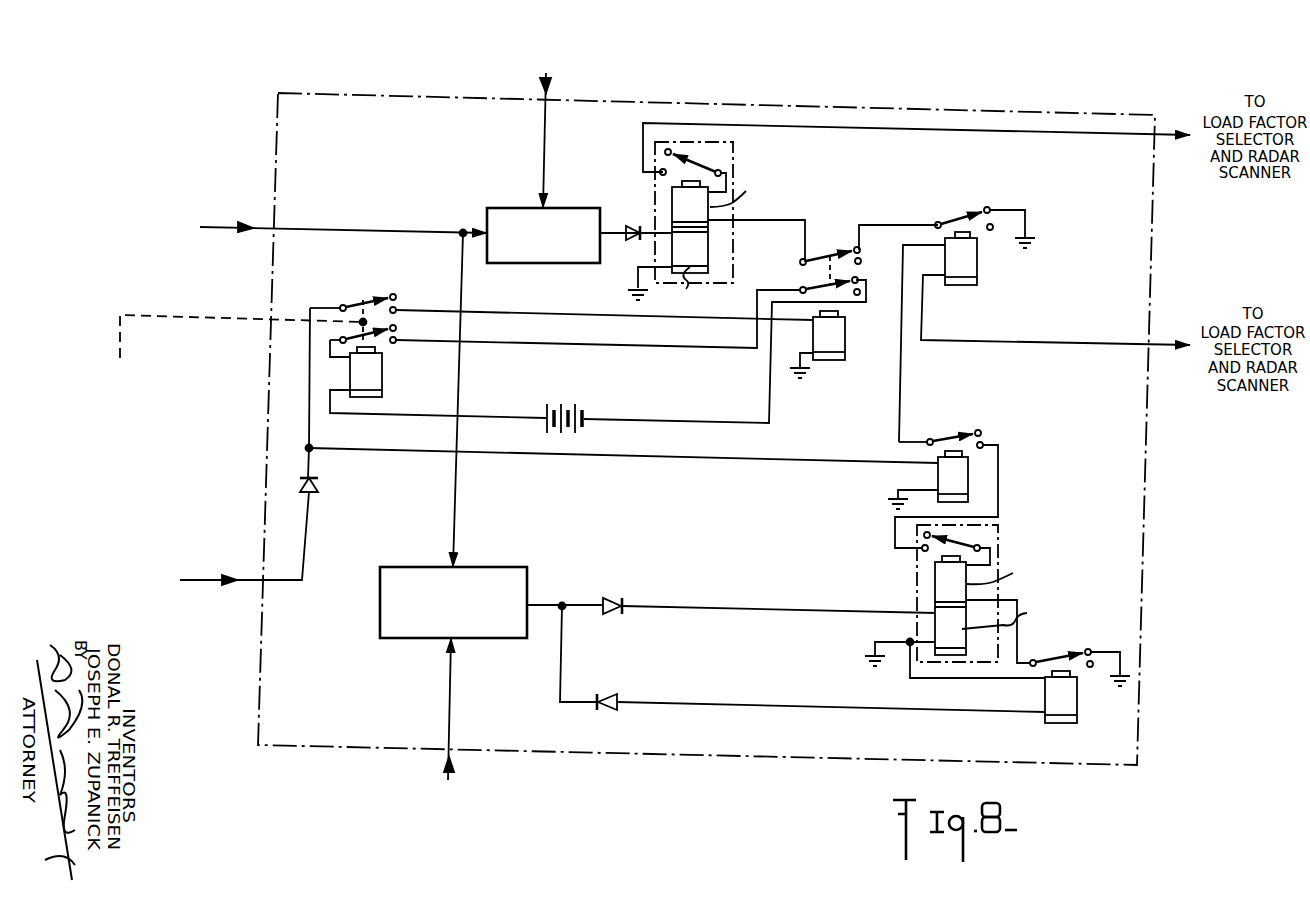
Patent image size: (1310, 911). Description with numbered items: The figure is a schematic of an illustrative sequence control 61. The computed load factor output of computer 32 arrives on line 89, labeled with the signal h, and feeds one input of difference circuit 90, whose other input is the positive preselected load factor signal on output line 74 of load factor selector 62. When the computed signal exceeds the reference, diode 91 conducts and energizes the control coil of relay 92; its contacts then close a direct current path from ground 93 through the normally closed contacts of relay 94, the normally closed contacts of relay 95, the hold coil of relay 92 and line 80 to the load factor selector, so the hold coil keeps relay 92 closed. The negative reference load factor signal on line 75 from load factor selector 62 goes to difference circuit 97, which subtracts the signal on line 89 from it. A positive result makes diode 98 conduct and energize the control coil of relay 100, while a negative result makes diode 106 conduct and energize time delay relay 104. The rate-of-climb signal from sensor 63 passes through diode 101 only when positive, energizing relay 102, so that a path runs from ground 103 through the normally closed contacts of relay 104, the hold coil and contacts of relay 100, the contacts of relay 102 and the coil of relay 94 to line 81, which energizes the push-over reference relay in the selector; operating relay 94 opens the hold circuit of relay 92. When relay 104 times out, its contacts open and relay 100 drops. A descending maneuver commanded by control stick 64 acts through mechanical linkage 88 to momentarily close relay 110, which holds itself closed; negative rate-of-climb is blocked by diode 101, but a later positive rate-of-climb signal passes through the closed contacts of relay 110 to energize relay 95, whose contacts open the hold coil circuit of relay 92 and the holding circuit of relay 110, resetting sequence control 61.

The sequence control 61 is at (903, 105).
The load factor selector 62 is at (497, 429).
The computer 32 is at (108, 224).
The control stick 64 is at (120, 384).
The rate-of-climb sensor 63 is at (100, 576).
The output line of the load factor selector 74 is at (546, 134).
The line 89 is at (320, 226).
The altitude signal h is at (409, 234).
The difference circuit 90 is at (505, 207).
The diode 91 is at (632, 229).
The relay 92 is at (733, 146).
The ground 93 is at (1028, 226).
The relay 94 is at (977, 274).
The relay 95 is at (845, 336).
The line 80 is at (1065, 137).
The line 81 is at (1088, 342).
The mechanical linkage 88 is at (203, 316).
The relay 110 is at (382, 373).
The diode 101 is at (322, 487).
The difference circuit 97 is at (489, 564).
The diode 98 is at (615, 597).
The diode 106 is at (607, 692).
The line 75 is at (450, 683).
The relay 102 is at (968, 473).
The relay 100 is at (998, 533).
The ground 103 is at (1125, 661).
The time delay relay 104 is at (1077, 701).